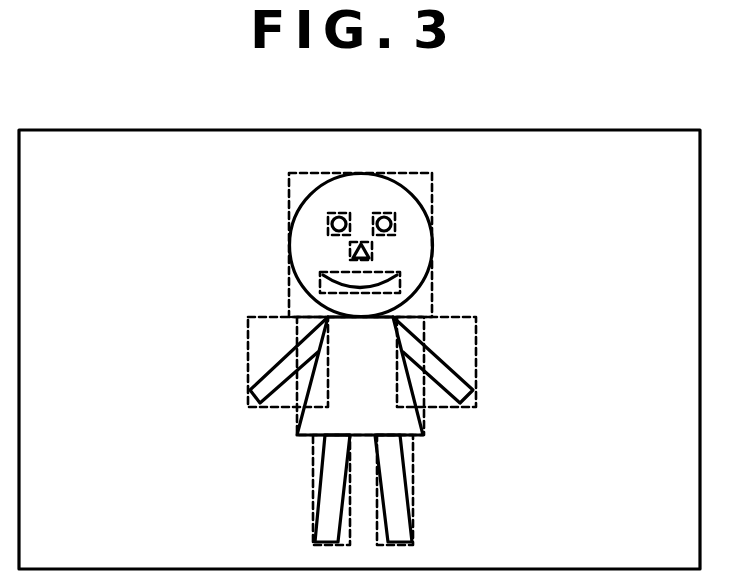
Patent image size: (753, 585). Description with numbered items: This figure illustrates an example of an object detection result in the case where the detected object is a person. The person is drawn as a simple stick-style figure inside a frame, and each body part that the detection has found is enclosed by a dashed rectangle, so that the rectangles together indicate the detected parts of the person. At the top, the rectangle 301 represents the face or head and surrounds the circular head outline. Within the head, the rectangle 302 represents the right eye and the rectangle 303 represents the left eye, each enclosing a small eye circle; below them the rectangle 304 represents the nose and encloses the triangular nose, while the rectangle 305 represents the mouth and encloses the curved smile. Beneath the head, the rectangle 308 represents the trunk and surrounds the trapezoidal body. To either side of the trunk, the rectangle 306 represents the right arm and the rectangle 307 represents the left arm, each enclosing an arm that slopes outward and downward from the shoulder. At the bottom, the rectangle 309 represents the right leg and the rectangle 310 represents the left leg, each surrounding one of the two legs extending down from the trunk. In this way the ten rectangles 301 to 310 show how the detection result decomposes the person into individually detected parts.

The rectangle representing a face or head 301 is at (433, 201).
The rectangle representing a right eye 302 is at (339, 212).
The rectangle representing a left eye 303 is at (384, 212).
The rectangle representing a nose 304 is at (373, 250).
The rectangle representing a mouth 305 is at (401, 278).
The rectangle representing a right arm 306 is at (247, 352).
The rectangle representing a left arm 307 is at (477, 352).
The rectangle representing a trunk 308 is at (425, 418).
The rectangle representing a right leg 309 is at (313, 490).
The rectangle representing a left leg 310 is at (413, 490).